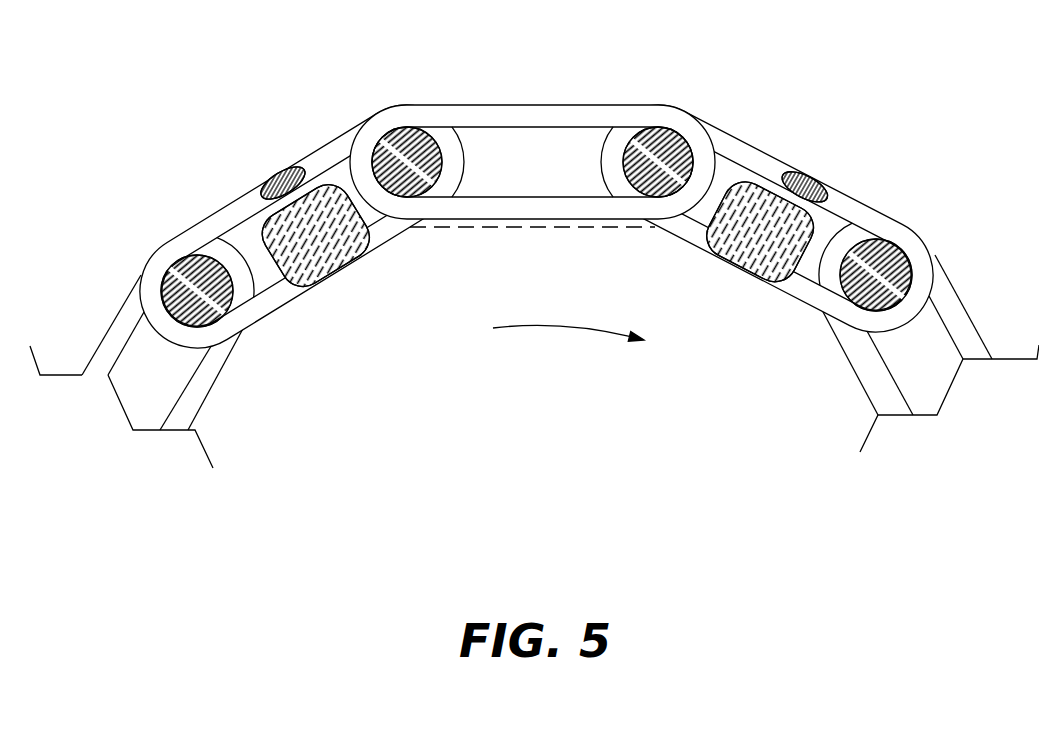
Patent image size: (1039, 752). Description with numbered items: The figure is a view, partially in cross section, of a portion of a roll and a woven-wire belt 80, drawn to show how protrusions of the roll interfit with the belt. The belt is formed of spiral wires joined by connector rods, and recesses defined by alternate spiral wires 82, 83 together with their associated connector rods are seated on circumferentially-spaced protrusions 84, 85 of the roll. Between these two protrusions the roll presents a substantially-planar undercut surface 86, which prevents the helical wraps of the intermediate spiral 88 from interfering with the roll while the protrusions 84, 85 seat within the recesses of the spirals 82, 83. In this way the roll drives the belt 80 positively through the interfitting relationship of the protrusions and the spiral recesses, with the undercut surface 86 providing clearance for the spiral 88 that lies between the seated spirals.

The belt 80 is at (680, 94).
The spiral wire 82 is at (245, 190).
The spiral wire 83 is at (770, 156).
The protrusion 84 is at (355, 262).
The protrusion 85 is at (773, 283).
The substantially-planar undercut surface 86 is at (567, 229).
The spiral 88 is at (522, 104).